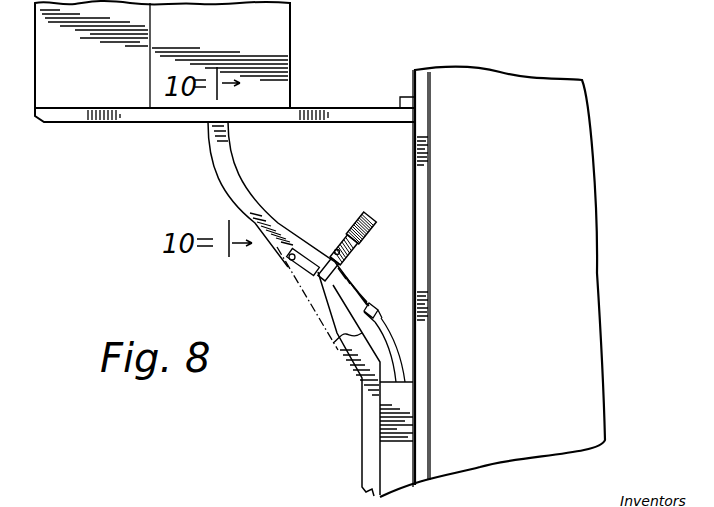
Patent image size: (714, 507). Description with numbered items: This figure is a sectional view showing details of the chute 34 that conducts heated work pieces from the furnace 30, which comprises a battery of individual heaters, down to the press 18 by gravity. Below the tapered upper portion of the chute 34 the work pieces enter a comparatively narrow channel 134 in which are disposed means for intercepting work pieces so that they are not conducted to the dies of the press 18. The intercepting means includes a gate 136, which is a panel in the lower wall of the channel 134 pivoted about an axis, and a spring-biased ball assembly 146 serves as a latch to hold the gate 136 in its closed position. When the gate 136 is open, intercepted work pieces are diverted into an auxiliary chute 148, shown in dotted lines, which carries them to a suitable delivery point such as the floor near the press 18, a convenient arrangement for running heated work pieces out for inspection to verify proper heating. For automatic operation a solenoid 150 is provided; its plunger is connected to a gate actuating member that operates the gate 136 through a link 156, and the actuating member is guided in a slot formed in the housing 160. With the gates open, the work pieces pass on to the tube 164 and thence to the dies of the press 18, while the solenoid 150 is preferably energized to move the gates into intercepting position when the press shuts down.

The furnace 30 is at (286, 47).
The chute 34 is at (207, 163).
The press 18 is at (588, 277).
The channel 134 is at (303, 251).
The gate 136 is at (285, 262).
The spring-biased ball assembly 146 is at (328, 268).
The auxiliary chute 148 is at (352, 352).
The solenoid 150 is at (363, 236).
The link 156 is at (340, 255).
The housing 160 is at (353, 243).
The tube 164 is at (392, 343).